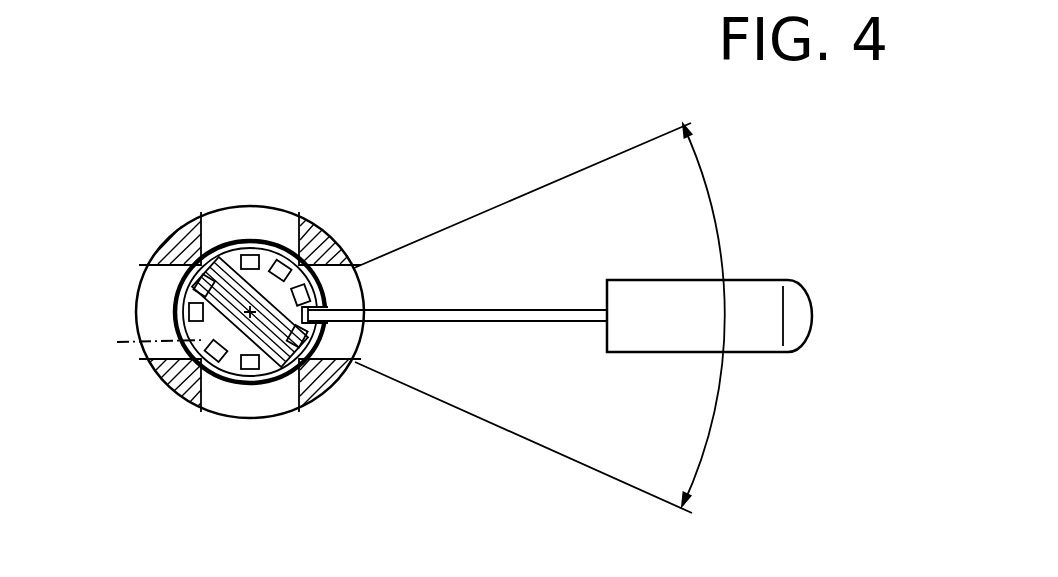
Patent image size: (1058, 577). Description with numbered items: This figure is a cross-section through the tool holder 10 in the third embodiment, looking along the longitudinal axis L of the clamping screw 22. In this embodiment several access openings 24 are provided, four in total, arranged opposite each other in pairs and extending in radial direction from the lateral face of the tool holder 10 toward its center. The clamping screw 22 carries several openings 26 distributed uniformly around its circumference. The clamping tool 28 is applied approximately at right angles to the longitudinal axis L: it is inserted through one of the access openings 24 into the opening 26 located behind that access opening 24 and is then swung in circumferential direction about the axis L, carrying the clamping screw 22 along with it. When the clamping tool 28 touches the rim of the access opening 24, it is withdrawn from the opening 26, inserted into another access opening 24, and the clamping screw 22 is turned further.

The tool holder 10 is at (170, 232).
The clamping screw 22 is at (245, 340).
The access opening 24 is at (152, 286).
The opening 26 is at (308, 342).
The clamping tool 28 is at (520, 315).
The longitudinal axis L is at (155, 346).